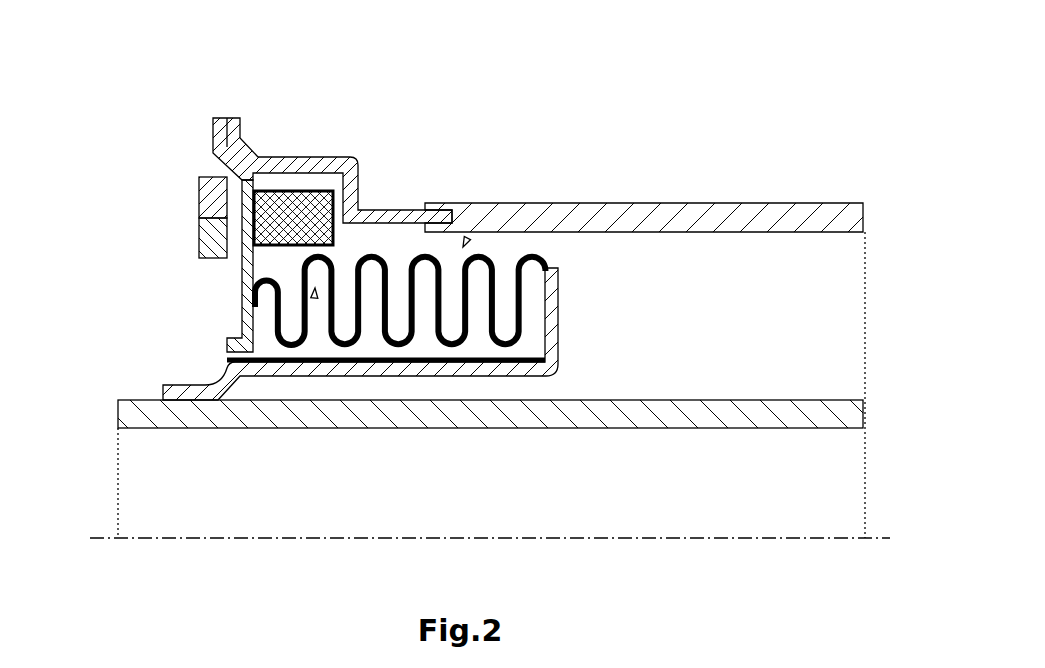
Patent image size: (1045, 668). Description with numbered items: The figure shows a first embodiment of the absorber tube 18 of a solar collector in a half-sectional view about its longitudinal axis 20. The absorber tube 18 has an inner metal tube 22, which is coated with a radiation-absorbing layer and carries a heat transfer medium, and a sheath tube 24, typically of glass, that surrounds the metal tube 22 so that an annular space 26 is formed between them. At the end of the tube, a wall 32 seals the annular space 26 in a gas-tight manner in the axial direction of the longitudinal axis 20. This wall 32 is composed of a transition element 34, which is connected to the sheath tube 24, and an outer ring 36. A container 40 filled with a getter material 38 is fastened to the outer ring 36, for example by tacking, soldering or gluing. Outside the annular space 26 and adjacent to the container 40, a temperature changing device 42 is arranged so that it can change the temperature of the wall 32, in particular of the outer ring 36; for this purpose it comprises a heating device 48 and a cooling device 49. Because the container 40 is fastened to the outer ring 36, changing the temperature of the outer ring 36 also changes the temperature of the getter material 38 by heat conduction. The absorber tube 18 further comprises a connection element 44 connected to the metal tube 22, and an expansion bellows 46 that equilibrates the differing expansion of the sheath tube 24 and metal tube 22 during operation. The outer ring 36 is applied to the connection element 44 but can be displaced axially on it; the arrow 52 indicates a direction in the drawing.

The absorber tube 18 is at (710, 140).
The longitudinal axis 20 is at (158, 535).
The metal tube 22 is at (690, 398).
The sheath tube 24 is at (518, 210).
The annular space 26 is at (723, 302).
The wall 32 is at (175, 130).
The transition element 34 is at (317, 167).
The outer ring 36 is at (242, 328).
The getter material 38 is at (275, 231).
The container 40 is at (293, 158).
The temperature changing device 42 is at (157, 192).
The connection element 44 is at (553, 343).
The expansion bellows 46 is at (464, 244).
The heating device 48 is at (202, 232).
The cooling device 49 is at (202, 195).
The bellows 52 is at (314, 292).